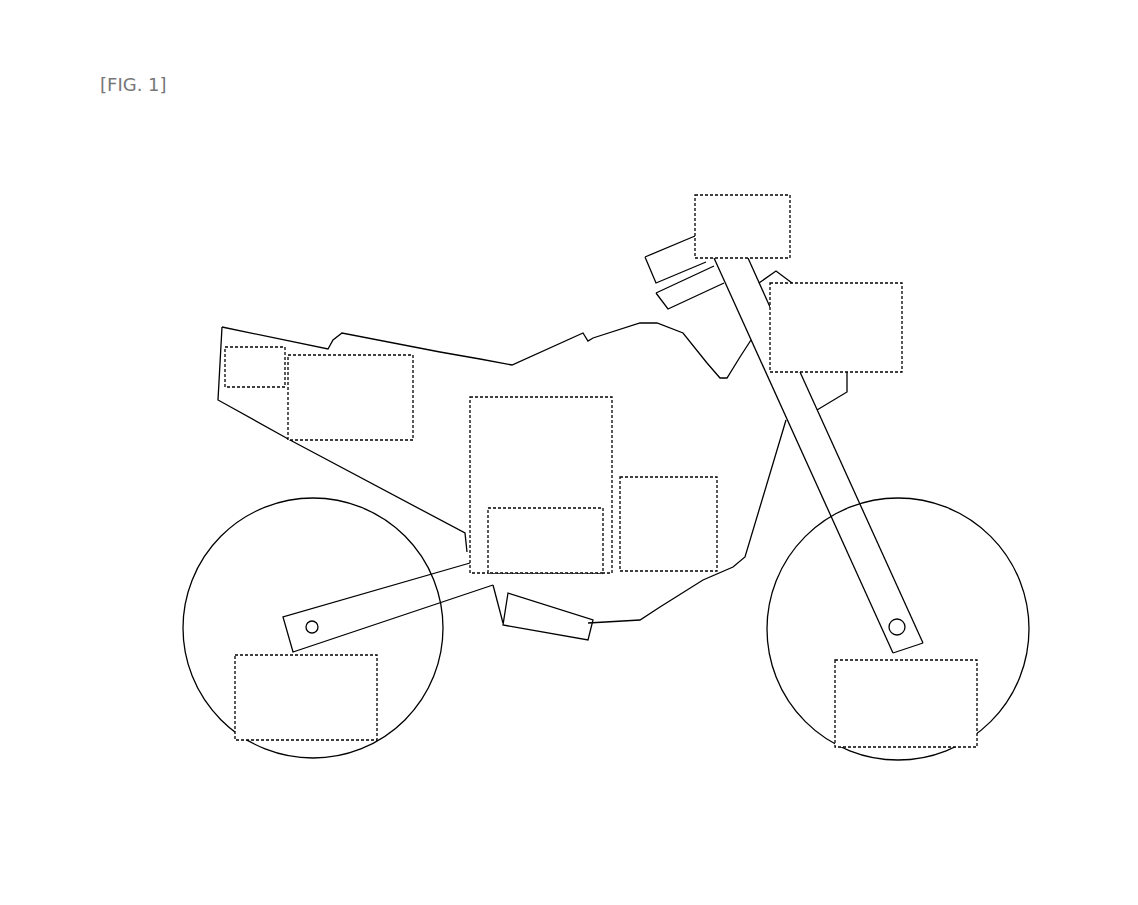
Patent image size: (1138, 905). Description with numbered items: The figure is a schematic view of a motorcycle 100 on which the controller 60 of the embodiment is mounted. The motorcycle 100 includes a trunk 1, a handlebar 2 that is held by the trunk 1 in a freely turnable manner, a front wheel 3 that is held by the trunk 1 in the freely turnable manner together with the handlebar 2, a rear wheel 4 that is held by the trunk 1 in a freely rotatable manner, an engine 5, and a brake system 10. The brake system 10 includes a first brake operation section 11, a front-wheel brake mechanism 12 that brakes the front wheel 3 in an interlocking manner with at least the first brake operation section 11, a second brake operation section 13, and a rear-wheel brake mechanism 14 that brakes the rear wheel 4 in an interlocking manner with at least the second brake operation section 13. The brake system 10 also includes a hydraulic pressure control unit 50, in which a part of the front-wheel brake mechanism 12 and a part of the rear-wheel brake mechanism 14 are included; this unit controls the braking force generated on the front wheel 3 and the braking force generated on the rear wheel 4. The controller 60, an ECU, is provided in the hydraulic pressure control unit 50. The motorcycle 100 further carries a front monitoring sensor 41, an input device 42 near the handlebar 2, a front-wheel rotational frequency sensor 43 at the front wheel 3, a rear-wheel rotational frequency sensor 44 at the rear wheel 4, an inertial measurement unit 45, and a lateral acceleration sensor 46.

The motorcycle 100 is at (965, 70).
The trunk 1 is at (423, 367).
The handlebar 2 is at (662, 260).
The front wheel 3 is at (898, 782).
The rear wheel 4 is at (313, 782).
The engine 5 is at (667, 573).
The brake system 10 is at (887, 410).
The first brake operation section 11 is at (652, 297).
The front-wheel brake mechanism 12 is at (918, 591).
The second brake operation section 13 is at (563, 620).
The rear-wheel brake mechanism 14 is at (292, 603).
The front monitoring sensor 41 is at (838, 283).
The input device 42 is at (726, 195).
The front-wheel rotational frequency sensor 43 is at (988, 696).
The rear-wheel rotational frequency sensor 44 is at (388, 692).
The inertial measurement unit (IMU) 45 is at (248, 347).
The lateral acceleration sensor 46 is at (337, 347).
The hydraulic pressure control unit 50 is at (510, 397).
The controller (ECU) 60 is at (583, 573).